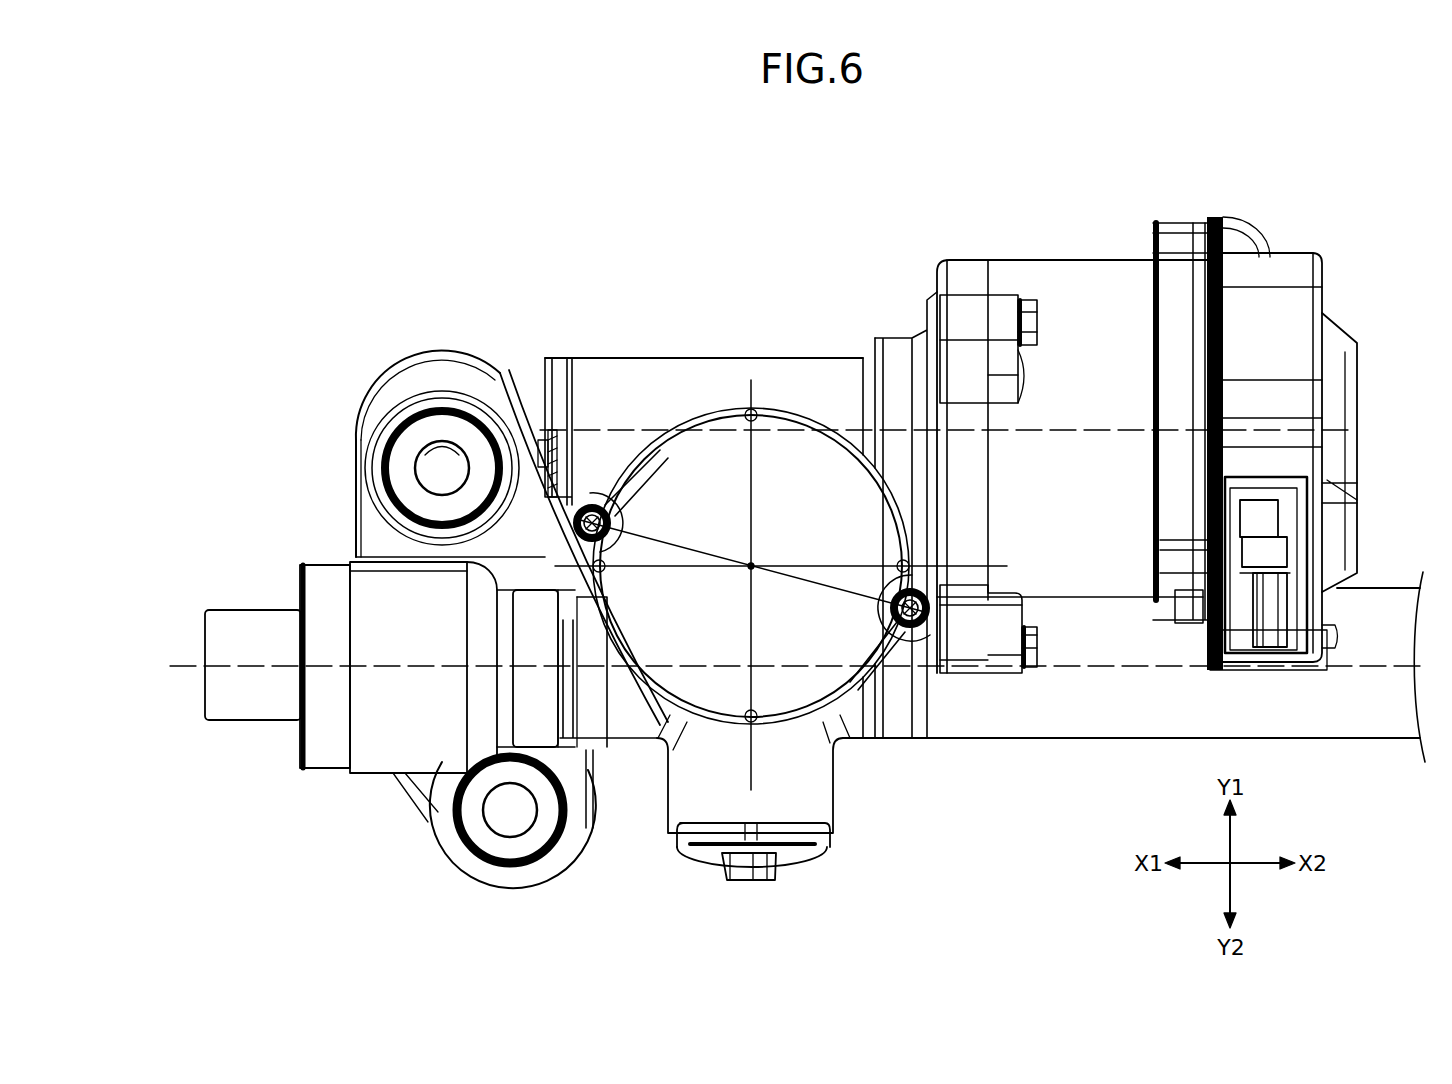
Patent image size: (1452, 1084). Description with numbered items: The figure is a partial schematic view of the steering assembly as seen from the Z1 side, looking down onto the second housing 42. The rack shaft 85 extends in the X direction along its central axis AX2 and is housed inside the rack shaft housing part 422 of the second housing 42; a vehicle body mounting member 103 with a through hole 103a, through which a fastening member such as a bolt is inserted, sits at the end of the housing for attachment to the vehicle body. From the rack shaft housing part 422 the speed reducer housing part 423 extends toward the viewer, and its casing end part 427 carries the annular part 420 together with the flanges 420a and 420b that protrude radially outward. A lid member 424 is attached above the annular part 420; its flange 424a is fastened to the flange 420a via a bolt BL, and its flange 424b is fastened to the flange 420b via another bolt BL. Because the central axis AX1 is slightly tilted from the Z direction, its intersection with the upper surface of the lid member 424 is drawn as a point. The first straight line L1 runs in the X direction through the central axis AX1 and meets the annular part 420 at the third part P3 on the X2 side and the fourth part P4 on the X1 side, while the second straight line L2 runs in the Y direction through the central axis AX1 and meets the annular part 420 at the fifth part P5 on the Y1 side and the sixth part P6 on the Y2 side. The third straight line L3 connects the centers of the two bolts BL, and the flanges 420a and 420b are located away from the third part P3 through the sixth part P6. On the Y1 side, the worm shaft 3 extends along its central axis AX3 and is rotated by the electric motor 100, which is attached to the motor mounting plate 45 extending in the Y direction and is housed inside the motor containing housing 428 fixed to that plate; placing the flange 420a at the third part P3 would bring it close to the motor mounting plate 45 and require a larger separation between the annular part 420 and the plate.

The vehicle body mounting member 103 is at (401, 431).
The through hole 103a is at (438, 472).
The flange 424b is at (581, 397).
The flange 420b is at (592, 500).
The speed reducer housing part 423 is at (687, 511).
The worm shaft 3 is at (657, 380).
The fifth part P5 is at (748, 406).
The lid member 424 is at (802, 470).
The motor mounting plate 45 is at (967, 318).
The motor containing housing 428 is at (1116, 465).
The electric motor 100 is at (1116, 465).
The central axis AX3 is at (1090, 430).
The central axis AX1 is at (749, 562).
The third part P3 is at (906, 562).
The first straight line L1 is at (1005, 566).
The bolt BL is at (590, 527).
The fourth part P4 is at (604, 572).
The third straight line L3 is at (812, 584).
The central axis AX2 is at (184, 680).
The rack shaft 85 is at (255, 693).
The rack shaft housing part 422 is at (376, 735).
The annular part 420 is at (745, 693).
The casing end part 427 is at (708, 718).
The sixth part P6 is at (748, 722).
The second straight line L2 is at (753, 765).
The flange 424a is at (901, 711).
The flange 420a is at (912, 630).
The second housing 42 is at (1073, 714).